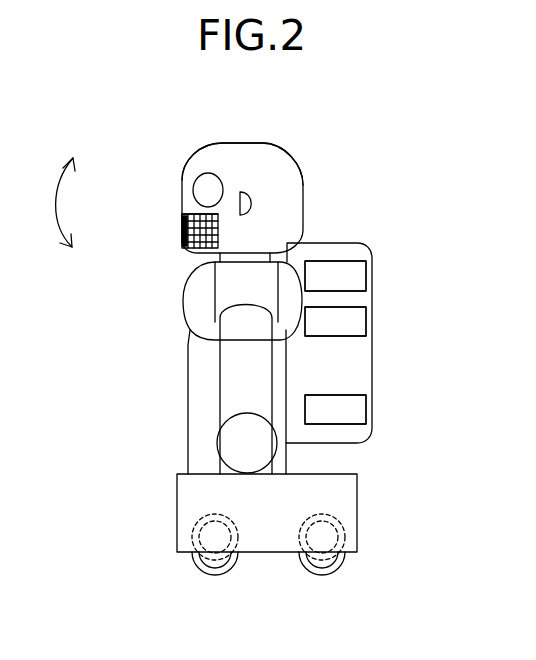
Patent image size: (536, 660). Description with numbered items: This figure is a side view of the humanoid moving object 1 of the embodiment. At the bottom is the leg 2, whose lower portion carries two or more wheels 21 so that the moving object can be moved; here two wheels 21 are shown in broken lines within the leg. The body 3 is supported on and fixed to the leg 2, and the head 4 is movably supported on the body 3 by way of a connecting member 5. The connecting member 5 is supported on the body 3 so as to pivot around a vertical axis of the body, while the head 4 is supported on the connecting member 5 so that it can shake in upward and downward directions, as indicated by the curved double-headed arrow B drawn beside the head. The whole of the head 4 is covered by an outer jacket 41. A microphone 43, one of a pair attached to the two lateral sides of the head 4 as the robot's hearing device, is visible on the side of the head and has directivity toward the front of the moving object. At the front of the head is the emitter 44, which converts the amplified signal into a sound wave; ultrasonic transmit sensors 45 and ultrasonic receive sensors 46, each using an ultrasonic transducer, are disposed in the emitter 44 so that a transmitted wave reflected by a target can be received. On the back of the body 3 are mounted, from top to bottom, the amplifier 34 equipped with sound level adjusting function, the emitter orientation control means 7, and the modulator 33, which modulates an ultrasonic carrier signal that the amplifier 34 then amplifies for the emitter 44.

The moving object 1 is at (236, 126).
The leg 2 is at (357, 510).
The body 3 is at (185, 336).
The head 4 is at (303, 172).
The connecting member 5 is at (267, 256).
The emitter orientation control means 7 is at (362, 322).
The wheels 21 is at (215, 565).
The modulator 33 is at (362, 410).
The amplifier 34 is at (362, 276).
The outer jacket 41 is at (190, 160).
The microphones 43 is at (253, 202).
The emitter 44 is at (182, 214).
The ultrasonic transmit sensors 45 is at (182, 226).
The ultrasonic receive sensors 46 is at (182, 240).